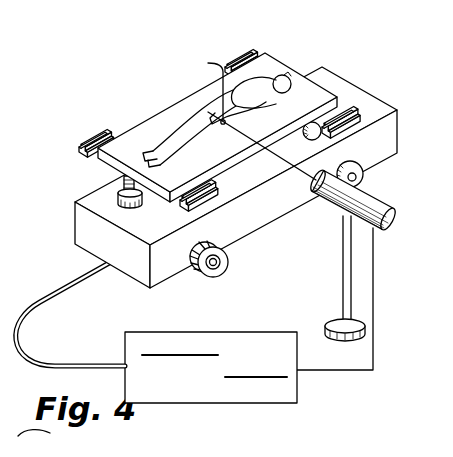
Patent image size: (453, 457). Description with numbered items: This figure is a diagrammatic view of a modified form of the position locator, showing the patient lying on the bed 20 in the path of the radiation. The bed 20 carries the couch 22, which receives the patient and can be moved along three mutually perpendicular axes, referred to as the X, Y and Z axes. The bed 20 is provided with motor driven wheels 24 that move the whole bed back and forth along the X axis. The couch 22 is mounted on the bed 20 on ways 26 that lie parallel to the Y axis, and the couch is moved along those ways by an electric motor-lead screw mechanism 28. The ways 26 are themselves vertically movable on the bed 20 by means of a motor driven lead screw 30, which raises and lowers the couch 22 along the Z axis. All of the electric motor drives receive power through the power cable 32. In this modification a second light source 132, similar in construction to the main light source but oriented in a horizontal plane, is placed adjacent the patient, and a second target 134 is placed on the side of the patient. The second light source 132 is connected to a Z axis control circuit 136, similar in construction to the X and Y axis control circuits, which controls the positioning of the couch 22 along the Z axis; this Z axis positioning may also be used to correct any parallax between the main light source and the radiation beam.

The bed 20 is at (286, 213).
The couch 22 is at (148, 118).
The motor driven wheels 24 is at (353, 163).
The ways 26 is at (238, 46).
The electric motor-lead screw mechanism 28 is at (313, 136).
The motor driven lead screw 30 is at (118, 184).
The power cable 32 is at (57, 363).
The second light source 132 is at (386, 203).
The second target 134 is at (229, 118).
The Z axis control circuit 136 is at (297, 403).